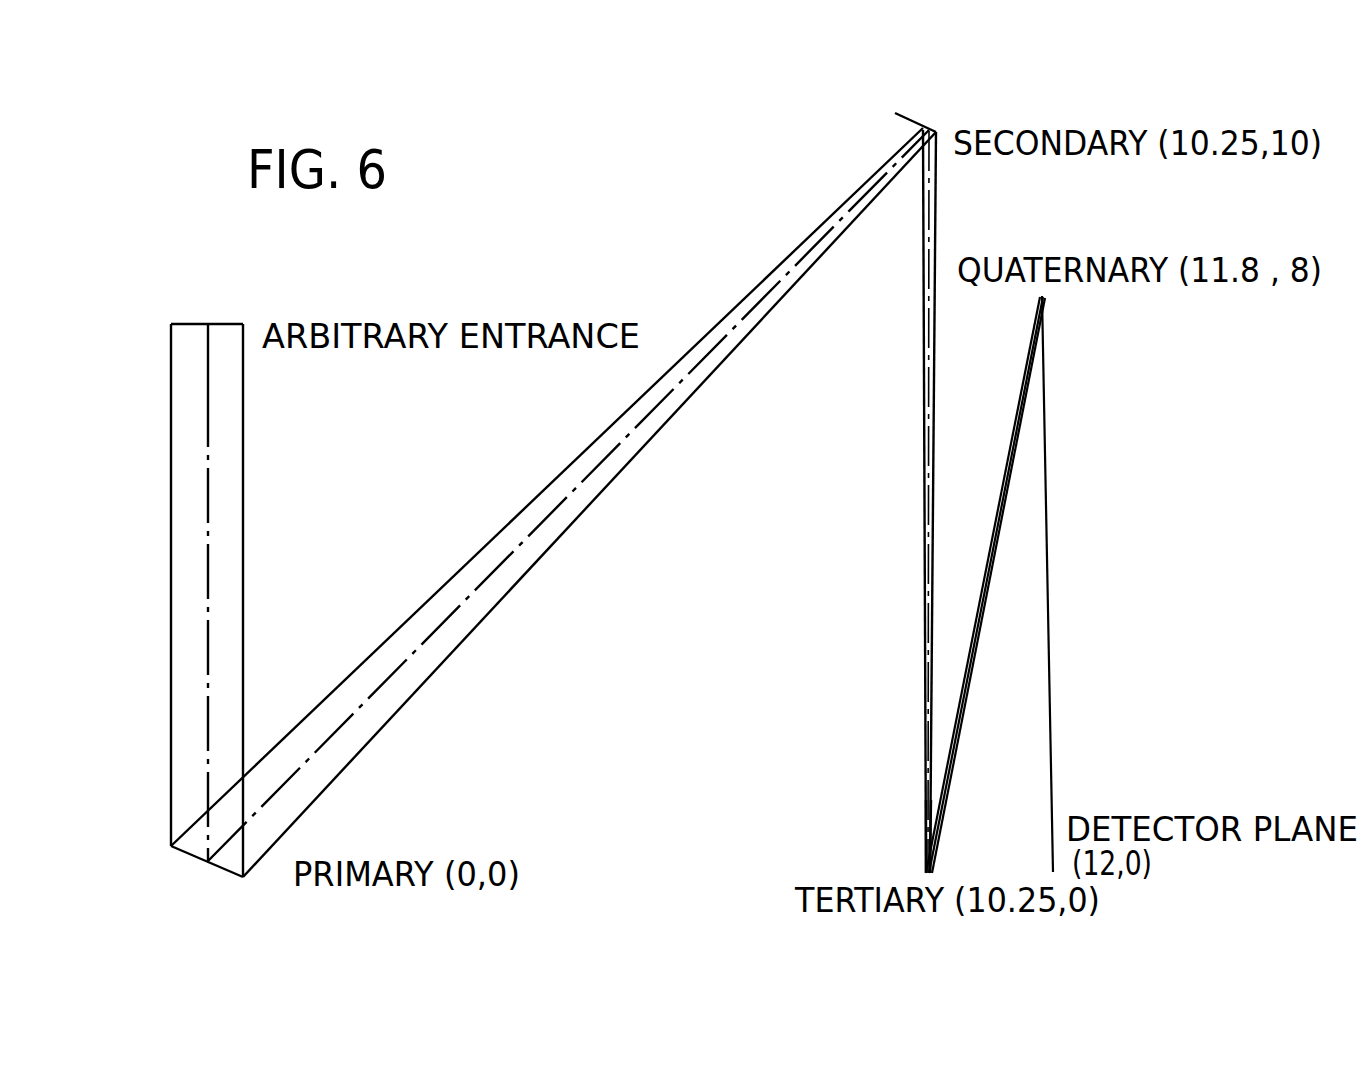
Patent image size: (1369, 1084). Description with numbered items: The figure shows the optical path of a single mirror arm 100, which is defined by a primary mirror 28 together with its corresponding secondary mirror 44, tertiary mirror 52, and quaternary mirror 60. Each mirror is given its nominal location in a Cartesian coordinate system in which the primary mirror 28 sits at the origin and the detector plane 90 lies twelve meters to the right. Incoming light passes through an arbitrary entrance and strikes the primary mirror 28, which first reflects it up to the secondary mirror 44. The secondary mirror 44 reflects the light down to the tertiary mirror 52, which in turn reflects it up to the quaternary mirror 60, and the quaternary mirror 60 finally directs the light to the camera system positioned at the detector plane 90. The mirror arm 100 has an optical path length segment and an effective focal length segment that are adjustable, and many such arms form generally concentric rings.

The mirror arm 100 is at (615, 260).
The primary mirror 28 is at (189, 855).
The secondary mirror 44 is at (921, 124).
The tertiary mirror 52 is at (925, 874).
The quaternary mirror 60 is at (1043, 297).
The detector plane 90 is at (1050, 872).